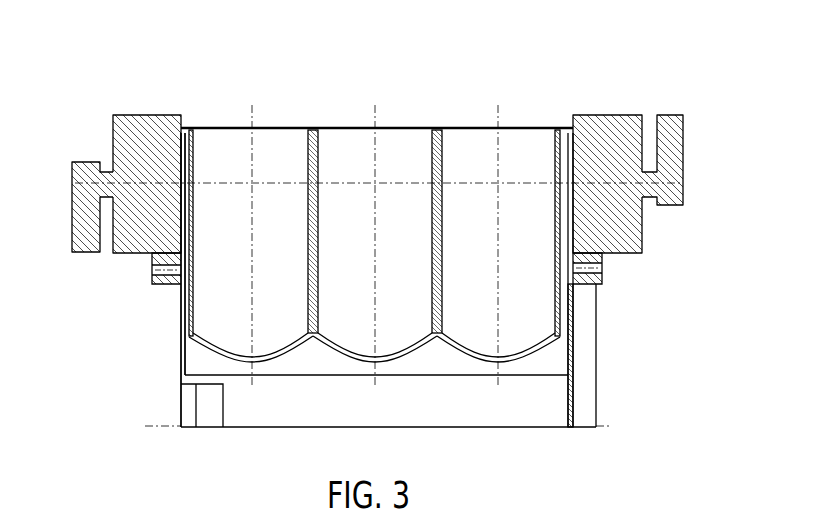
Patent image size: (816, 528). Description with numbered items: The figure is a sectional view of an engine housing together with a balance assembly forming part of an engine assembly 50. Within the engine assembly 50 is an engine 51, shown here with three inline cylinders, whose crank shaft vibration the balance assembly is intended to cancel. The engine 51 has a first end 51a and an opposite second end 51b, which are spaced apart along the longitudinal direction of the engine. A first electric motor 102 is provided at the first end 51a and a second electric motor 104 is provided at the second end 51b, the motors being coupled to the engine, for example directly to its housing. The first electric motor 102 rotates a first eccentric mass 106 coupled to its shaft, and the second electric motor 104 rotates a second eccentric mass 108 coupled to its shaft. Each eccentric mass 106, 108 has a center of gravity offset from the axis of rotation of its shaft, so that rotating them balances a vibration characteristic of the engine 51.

The engine assembly 50 is at (160, 83).
The engine 51 is at (356, 92).
The first end of the engine 51a is at (575, 322).
The second end of the engine 51b is at (182, 323).
The first electric motor 102 is at (588, 116).
The second electric motor 104 is at (148, 253).
The first eccentric mass 106 is at (683, 152).
The second eccentric mass 108 is at (72, 228).